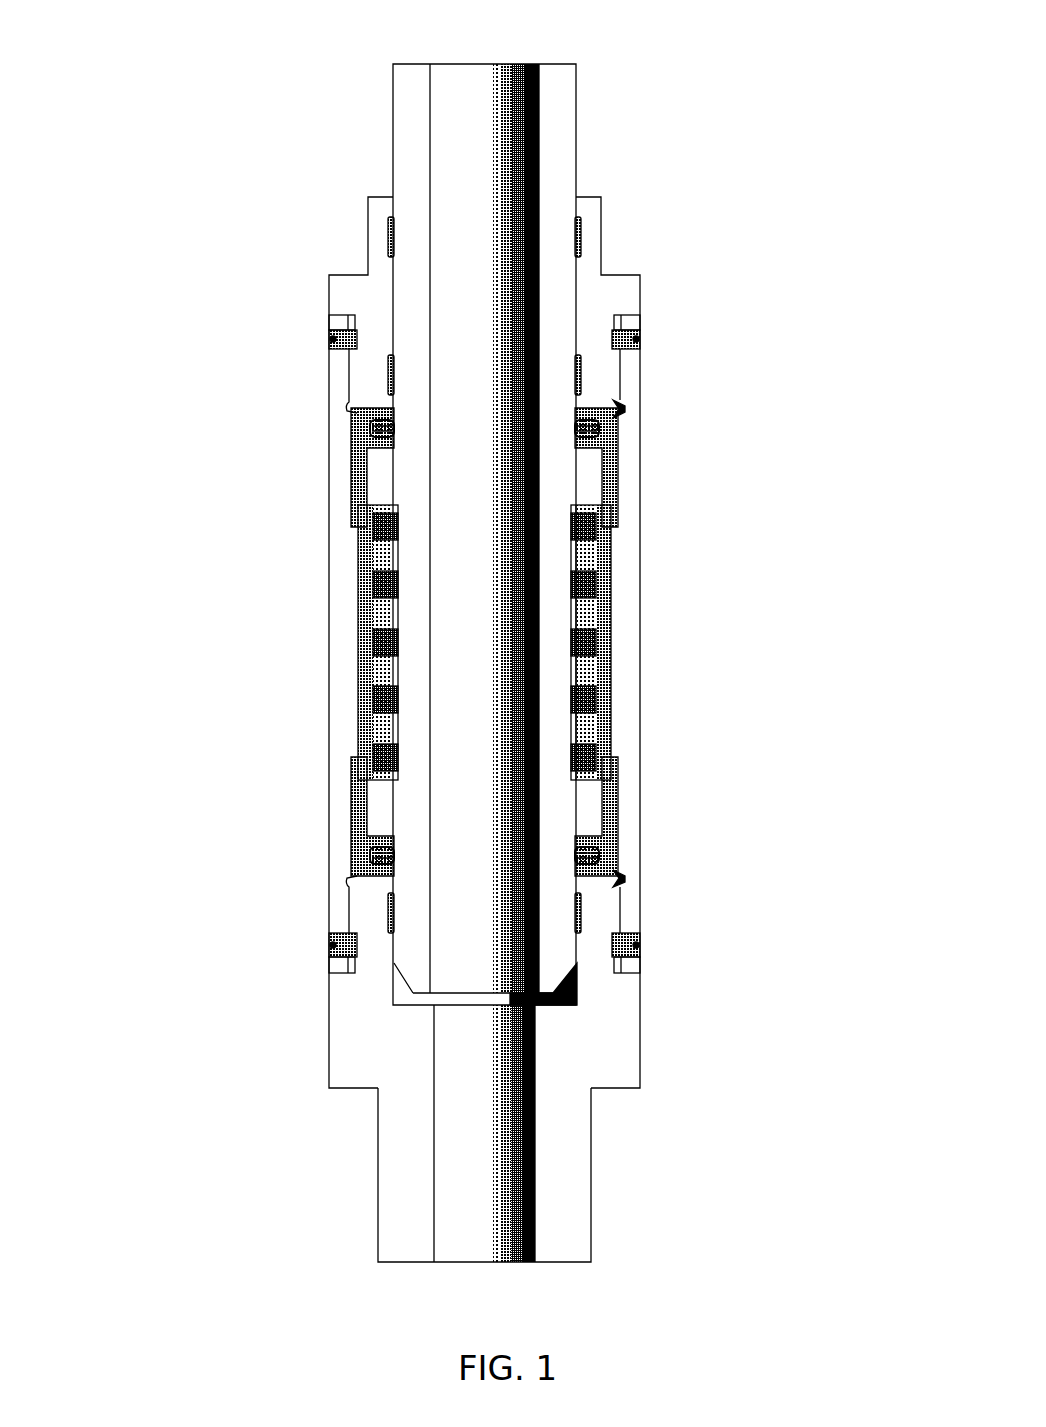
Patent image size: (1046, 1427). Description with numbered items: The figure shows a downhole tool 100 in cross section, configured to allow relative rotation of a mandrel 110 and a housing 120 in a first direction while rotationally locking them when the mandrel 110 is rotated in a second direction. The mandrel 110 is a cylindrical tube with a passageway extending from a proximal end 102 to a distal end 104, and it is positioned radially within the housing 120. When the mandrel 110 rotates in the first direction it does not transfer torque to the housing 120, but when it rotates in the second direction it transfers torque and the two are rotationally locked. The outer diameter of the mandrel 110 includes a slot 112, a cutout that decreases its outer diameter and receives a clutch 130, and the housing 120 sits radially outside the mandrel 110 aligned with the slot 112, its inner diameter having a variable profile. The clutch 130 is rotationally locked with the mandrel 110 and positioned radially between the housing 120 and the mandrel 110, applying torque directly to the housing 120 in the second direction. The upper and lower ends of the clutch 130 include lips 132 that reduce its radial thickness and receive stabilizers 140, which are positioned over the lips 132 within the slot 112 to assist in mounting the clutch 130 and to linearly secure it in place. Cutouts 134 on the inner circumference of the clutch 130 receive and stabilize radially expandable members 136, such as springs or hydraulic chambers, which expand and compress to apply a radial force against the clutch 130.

The downhole tool 100 is at (138, 120).
The proximal end 102 is at (552, 68).
The distal end 104 is at (560, 1260).
The mandrel 110 is at (500, 400).
The slot 112 is at (570, 668).
The housing 120 is at (622, 633).
The clutch 130 is at (373, 668).
The lips 132 is at (602, 510).
The cutouts 134 is at (583, 570).
The radially expandable members 136 is at (373, 705).
The stabilizers 140 is at (355, 472).